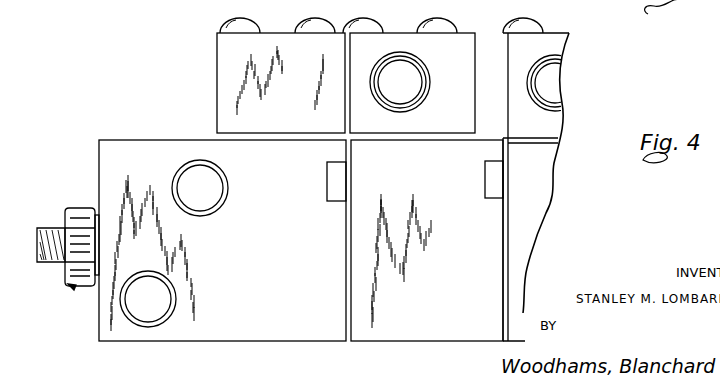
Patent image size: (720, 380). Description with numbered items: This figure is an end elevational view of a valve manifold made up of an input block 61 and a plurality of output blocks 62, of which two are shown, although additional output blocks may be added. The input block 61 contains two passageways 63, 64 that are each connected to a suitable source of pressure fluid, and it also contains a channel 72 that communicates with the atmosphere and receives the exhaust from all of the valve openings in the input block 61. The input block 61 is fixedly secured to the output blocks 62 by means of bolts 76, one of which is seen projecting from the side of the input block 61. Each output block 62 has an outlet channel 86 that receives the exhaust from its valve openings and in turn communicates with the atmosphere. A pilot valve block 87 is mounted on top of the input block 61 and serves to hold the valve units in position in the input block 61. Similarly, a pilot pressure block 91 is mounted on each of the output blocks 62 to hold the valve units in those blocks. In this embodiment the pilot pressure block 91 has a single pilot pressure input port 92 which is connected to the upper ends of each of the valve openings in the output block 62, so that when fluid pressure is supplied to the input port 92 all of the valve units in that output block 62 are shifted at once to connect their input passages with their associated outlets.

The input block 61 is at (157, 122).
The output block 62 is at (542, 188).
The passageway 63 is at (178, 178).
The passageway 64 is at (160, 258).
The channel 72 is at (337, 198).
The bolt 76 is at (52, 228).
The outlet channel 86 is at (488, 176).
The pilot valve block 87 is at (225, 53).
The pilot pressure block 91 is at (408, 33).
The pilot pressure input port 92 is at (392, 62).